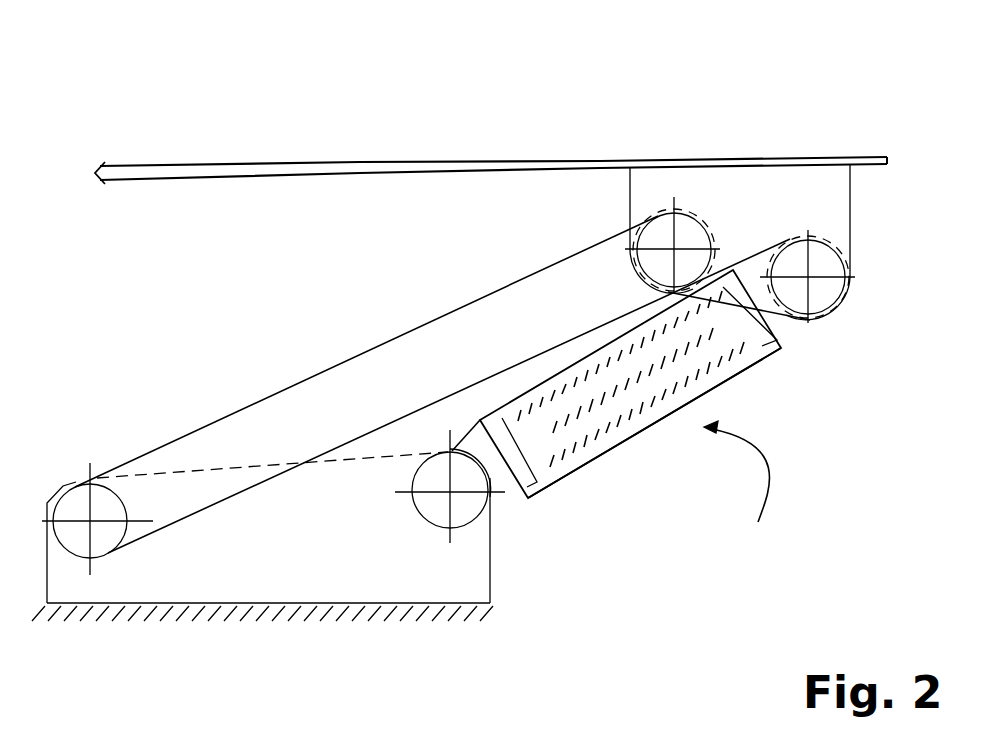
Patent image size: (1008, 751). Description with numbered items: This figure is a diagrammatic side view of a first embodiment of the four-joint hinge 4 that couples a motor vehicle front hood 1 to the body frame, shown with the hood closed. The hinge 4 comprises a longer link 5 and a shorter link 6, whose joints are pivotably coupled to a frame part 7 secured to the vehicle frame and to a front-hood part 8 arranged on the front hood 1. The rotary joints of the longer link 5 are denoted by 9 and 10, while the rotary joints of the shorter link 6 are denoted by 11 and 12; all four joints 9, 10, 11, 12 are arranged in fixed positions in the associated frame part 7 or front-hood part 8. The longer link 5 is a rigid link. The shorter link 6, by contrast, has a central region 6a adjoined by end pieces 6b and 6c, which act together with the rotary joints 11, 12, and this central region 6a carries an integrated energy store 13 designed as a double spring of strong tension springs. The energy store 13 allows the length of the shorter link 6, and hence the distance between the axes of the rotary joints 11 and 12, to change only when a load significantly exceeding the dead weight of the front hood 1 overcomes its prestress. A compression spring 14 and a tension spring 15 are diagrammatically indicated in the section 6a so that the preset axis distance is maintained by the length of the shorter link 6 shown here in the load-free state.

The front hood 1 is at (158, 172).
The hinge 4 is at (737, 490).
The longer link 5 is at (378, 372).
The shorter link 6 is at (674, 416).
The central region 6a is at (637, 434).
The end piece 6b is at (496, 498).
The end piece 6c is at (787, 323).
The frame part 7 is at (315, 529).
The front-hood part 8 is at (767, 183).
The rotary joint 9 is at (77, 507).
The rotary joint 10 is at (683, 232).
The rotary joint 11 is at (430, 505).
The rotary joint 12 is at (828, 260).
The energy store 13 is at (648, 379).
The compression spring 14 is at (688, 342).
The tension spring 15 is at (658, 370).